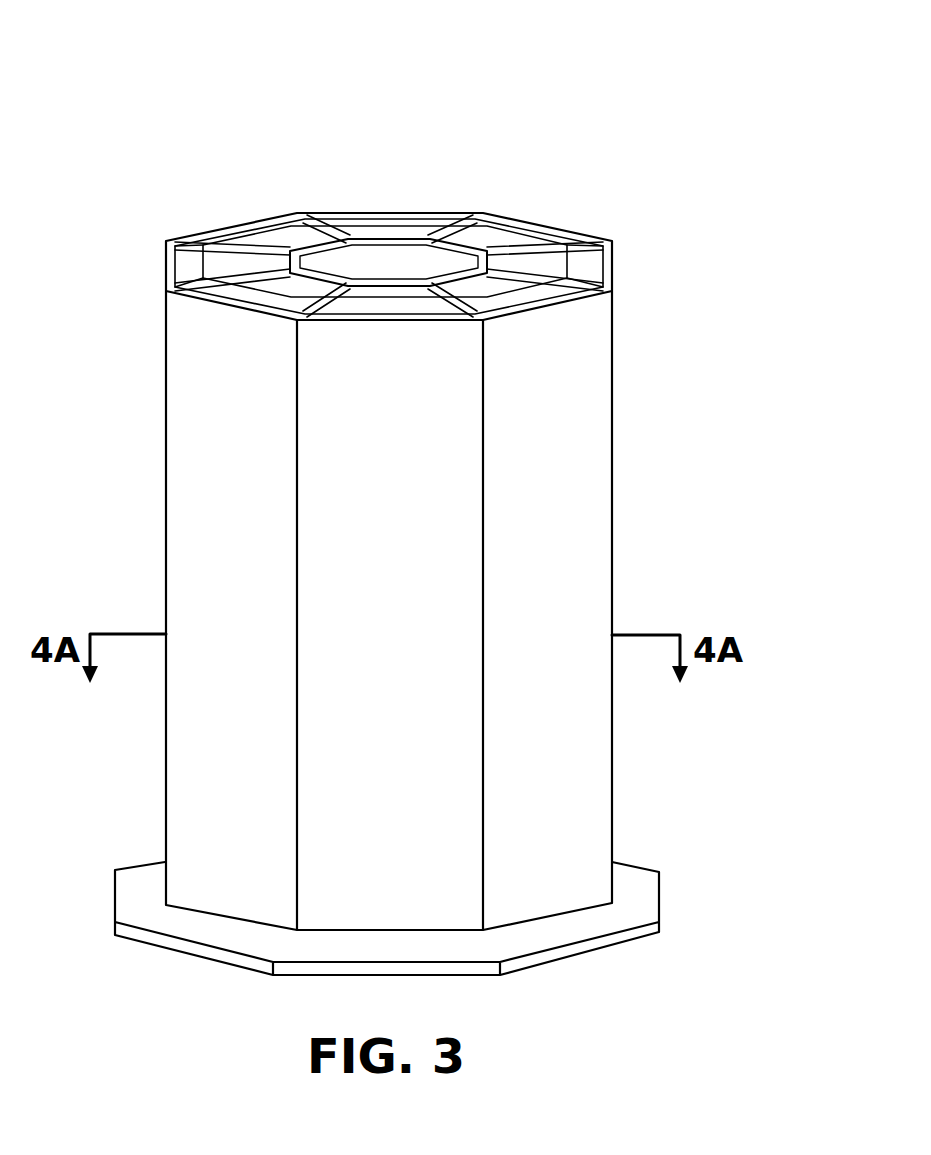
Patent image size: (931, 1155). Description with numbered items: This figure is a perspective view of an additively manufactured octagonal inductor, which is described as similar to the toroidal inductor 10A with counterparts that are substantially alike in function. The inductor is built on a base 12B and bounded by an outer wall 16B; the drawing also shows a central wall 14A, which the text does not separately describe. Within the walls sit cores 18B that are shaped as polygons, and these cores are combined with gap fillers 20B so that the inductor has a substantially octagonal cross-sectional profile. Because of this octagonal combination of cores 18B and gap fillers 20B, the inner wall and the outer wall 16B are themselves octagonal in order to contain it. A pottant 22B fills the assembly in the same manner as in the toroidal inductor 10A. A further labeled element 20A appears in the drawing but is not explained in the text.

The toroidal inductor 10A is at (712, 138).
The base 12B is at (628, 880).
The central hub 14A is at (405, 247).
The outer wall 16B is at (615, 252).
The cores 18B is at (552, 263).
The divider 20A is at (268, 265).
The gap fillers 20B is at (462, 288).
The pottant 22B is at (190, 257).